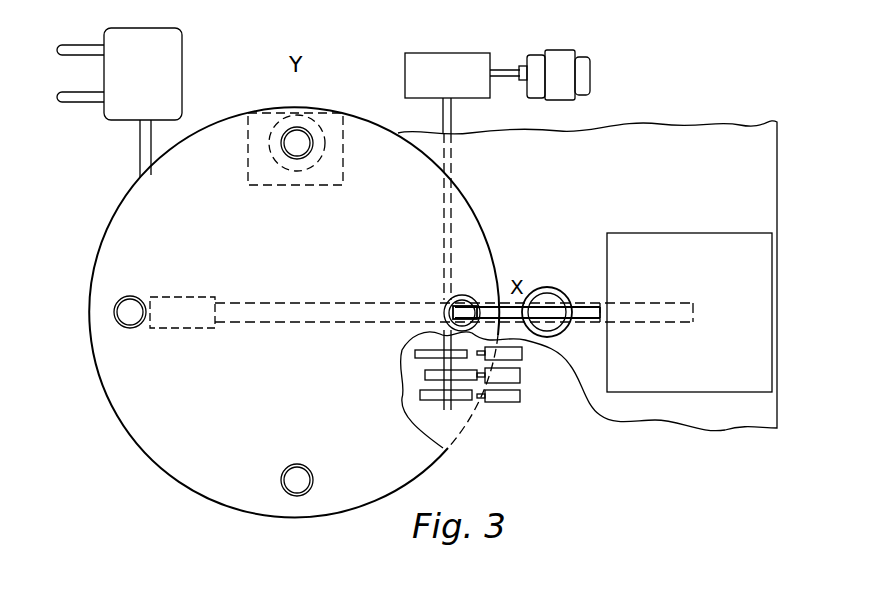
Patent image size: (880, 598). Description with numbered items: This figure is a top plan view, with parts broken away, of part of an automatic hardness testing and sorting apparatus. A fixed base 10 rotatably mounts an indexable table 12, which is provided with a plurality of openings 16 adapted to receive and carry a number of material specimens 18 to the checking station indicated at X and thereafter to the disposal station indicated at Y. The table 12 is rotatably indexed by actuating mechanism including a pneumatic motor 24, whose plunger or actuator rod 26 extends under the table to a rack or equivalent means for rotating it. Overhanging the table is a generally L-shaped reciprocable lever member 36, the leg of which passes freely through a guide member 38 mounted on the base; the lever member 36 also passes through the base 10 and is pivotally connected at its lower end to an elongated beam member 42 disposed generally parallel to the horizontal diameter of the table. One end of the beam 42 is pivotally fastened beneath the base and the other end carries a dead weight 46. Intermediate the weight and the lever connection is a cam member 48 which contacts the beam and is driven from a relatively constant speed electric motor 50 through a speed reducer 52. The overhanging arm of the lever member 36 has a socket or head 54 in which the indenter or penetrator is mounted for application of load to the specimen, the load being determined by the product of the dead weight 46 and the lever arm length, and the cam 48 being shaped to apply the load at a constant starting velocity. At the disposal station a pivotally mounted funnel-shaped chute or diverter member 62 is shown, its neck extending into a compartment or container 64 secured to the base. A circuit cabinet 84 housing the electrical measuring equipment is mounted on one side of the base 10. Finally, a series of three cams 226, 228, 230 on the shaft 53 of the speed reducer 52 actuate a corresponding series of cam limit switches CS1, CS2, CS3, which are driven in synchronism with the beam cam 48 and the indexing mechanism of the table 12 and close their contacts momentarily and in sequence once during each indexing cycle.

The fixed base 10 is at (655, 125).
The indexable table 12 is at (108, 227).
The openings 16 is at (287, 135).
The material specimens 18 is at (300, 140).
The pneumatic motor 24 is at (182, 88).
The actuator rod 26 is at (140, 136).
The lever member 36 is at (503, 292).
The guide member 38 is at (552, 290).
The beam member 42 is at (272, 323).
The dead weight 46 is at (197, 329).
The cam member 48 is at (445, 298).
The electric motor 50 is at (551, 60).
The speed reducer 52 is at (446, 56).
The shaft of speed reducer 53 is at (452, 104).
The socket or head 54 is at (478, 304).
The chute or diverter member 62 is at (322, 127).
The compartment or container 64 is at (340, 148).
The circuit cabinet 84 is at (641, 240).
The cam 226 is at (432, 354).
The cam 228 is at (428, 378).
The cam 230 is at (434, 396).
The cam limit switch CS1 is at (503, 351).
The cam limit switch CS2 is at (503, 376).
The cam limit switch CS3 is at (503, 397).